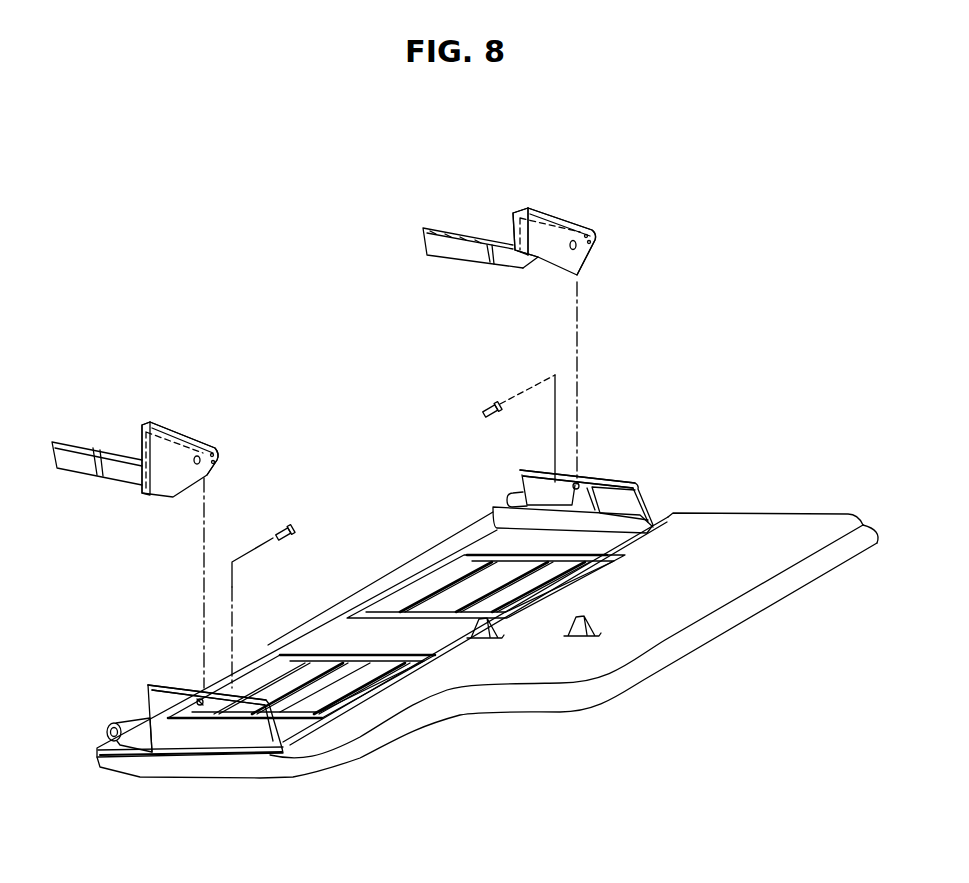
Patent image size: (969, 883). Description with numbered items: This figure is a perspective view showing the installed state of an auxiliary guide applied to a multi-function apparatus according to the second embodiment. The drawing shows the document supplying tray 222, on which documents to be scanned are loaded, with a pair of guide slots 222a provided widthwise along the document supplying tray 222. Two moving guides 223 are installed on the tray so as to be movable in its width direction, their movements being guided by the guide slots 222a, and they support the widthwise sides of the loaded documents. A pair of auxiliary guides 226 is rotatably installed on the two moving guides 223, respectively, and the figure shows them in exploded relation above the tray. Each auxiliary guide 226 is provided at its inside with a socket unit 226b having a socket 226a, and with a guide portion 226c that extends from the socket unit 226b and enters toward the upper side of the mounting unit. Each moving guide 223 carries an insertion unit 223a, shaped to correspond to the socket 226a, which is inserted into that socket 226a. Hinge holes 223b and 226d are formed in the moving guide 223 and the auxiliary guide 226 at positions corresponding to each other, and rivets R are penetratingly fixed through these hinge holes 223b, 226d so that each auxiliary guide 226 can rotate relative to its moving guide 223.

The document supplying tray 222 is at (705, 635).
The guide slots 222a is at (367, 662).
The moving guide 223 is at (233, 720).
The insertion unit 223a is at (170, 684).
The hinge hole 223b is at (200, 706).
The auxiliary guide 226 is at (596, 222).
The socket 226a is at (565, 222).
The socket unit 226b is at (528, 212).
The guide portion 226c is at (440, 248).
The hinge hole 226d is at (571, 250).
The rivet R is at (288, 525).